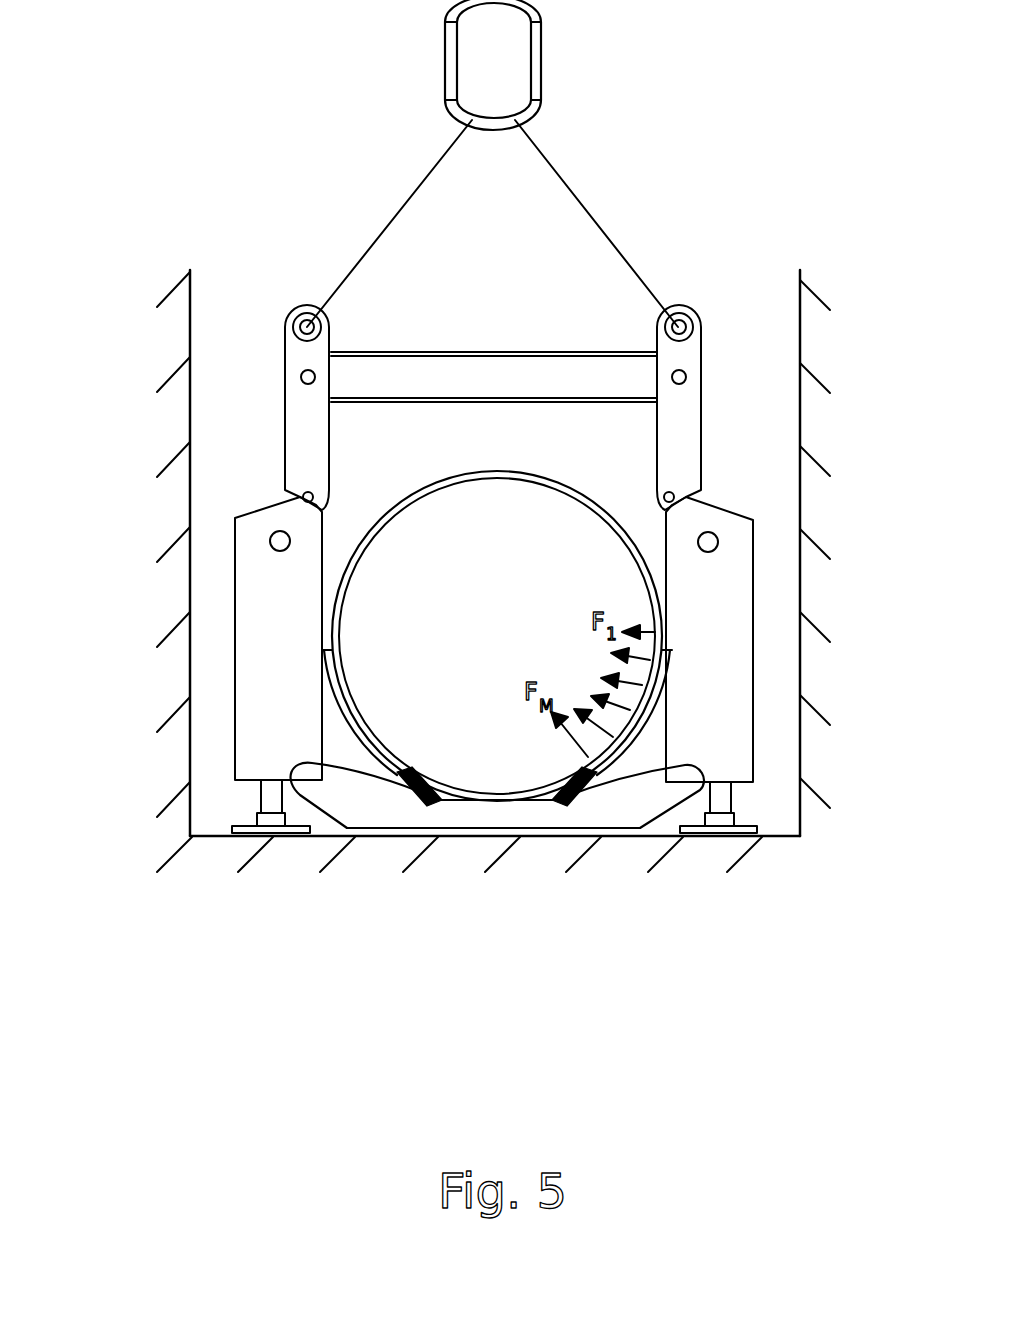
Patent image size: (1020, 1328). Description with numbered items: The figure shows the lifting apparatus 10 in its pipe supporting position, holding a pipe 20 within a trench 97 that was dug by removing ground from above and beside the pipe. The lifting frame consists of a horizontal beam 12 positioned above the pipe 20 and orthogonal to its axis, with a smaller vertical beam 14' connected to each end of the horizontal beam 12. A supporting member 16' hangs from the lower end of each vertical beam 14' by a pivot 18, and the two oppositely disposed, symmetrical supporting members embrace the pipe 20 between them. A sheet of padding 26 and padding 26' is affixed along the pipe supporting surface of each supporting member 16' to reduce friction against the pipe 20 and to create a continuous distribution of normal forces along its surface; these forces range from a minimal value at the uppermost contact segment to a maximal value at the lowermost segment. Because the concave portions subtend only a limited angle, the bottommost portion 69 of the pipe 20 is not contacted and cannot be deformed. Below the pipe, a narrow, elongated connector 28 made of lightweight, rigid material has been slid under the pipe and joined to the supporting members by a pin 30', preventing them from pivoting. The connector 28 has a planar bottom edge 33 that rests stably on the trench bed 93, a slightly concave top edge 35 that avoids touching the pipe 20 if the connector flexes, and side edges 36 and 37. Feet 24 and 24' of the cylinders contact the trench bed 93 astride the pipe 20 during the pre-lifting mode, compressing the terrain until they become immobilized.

The lifting apparatus 10 is at (727, 362).
The horizontal beam 12 is at (437, 351).
The vertical beam 14' is at (360, 407).
The supporting member 16' is at (383, 639).
The pivot 18 is at (296, 491).
The pipe 20 is at (468, 472).
The foot 24 is at (734, 869).
The foot 24' is at (271, 875).
The padding 26 is at (754, 712).
The padding 26' is at (227, 712).
The connector 28 is at (582, 818).
The pin 30' is at (498, 849).
The bottom edge 33 is at (535, 835).
The top edge 35 is at (455, 803).
The side edge 36 is at (650, 830).
The side edge 37 is at (400, 833).
The bottommost portion 69 is at (503, 783).
The trench bed 93 is at (214, 837).
The trench 97 is at (213, 337).